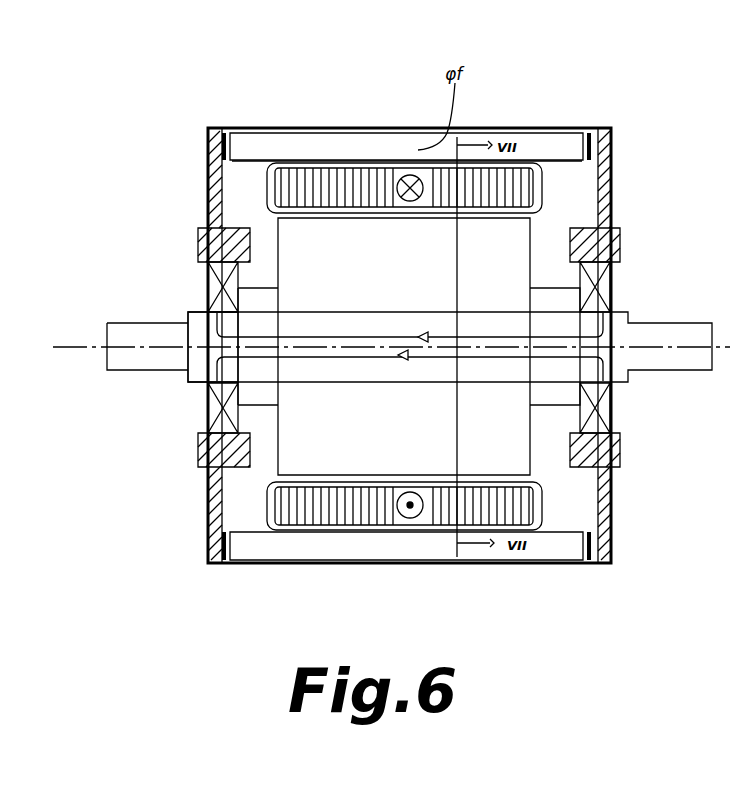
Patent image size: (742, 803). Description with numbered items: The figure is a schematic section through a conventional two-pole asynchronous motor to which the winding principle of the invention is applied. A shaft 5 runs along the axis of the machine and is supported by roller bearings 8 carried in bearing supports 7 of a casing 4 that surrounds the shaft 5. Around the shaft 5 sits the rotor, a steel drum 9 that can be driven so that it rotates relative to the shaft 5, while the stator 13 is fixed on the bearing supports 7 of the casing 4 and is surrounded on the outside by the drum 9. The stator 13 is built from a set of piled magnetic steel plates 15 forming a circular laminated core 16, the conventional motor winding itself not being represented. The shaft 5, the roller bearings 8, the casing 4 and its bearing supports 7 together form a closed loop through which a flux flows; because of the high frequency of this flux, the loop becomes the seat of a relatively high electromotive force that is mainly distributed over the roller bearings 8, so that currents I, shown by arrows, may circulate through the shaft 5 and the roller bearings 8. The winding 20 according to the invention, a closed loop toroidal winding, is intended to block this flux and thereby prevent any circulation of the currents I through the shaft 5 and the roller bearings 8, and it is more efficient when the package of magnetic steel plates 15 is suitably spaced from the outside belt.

The casing 4 is at (568, 128).
The shaft 5 is at (657, 363).
The bearing supports 7 is at (210, 182).
The roller bearings 8 is at (207, 290).
The steel drum 9 is at (485, 437).
The stator 13 is at (305, 178).
The magnetic steel plates 15 is at (395, 150).
The laminated core 16 is at (325, 505).
The winding 20 is at (520, 162).
The currents I is at (210, 322).